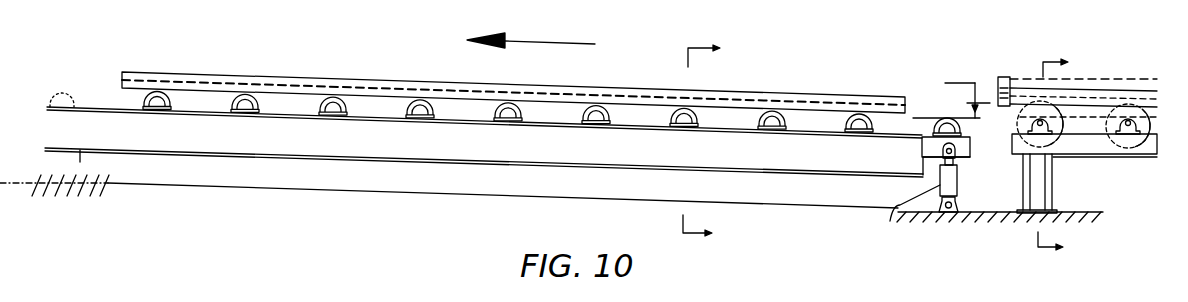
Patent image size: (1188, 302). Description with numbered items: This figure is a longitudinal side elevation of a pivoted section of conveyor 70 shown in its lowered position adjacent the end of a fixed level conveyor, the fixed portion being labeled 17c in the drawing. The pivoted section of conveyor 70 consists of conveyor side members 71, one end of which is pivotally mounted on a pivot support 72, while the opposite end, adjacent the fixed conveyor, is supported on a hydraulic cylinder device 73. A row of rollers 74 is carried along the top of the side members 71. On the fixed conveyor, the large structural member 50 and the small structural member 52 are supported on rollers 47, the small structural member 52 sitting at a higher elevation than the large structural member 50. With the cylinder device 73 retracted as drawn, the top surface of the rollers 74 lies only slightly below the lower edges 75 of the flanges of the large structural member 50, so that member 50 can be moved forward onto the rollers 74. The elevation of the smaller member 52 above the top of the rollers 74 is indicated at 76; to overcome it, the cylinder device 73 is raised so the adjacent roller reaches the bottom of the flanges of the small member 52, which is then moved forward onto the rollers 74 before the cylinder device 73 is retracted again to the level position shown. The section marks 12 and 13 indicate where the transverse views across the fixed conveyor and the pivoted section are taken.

The pivoted section of conveyor 70 is at (604, 83).
The conveyor side members 71 is at (276, 146).
The pivot support 72 is at (108, 187).
The hydraulic cylinder device 73 is at (917, 192).
The rollers 74 is at (940, 127).
The lower edges of the flanges 75 is at (1000, 108).
The elevation 76 is at (951, 95).
The large structural member 50 is at (998, 80).
The small structural member 52 is at (1007, 77).
The rollers 47 is at (1078, 132).
The carrier 17c is at (1138, 72).
The section line 12- 12 is at (1067, 156).
The section line 13- 13 is at (715, 146).